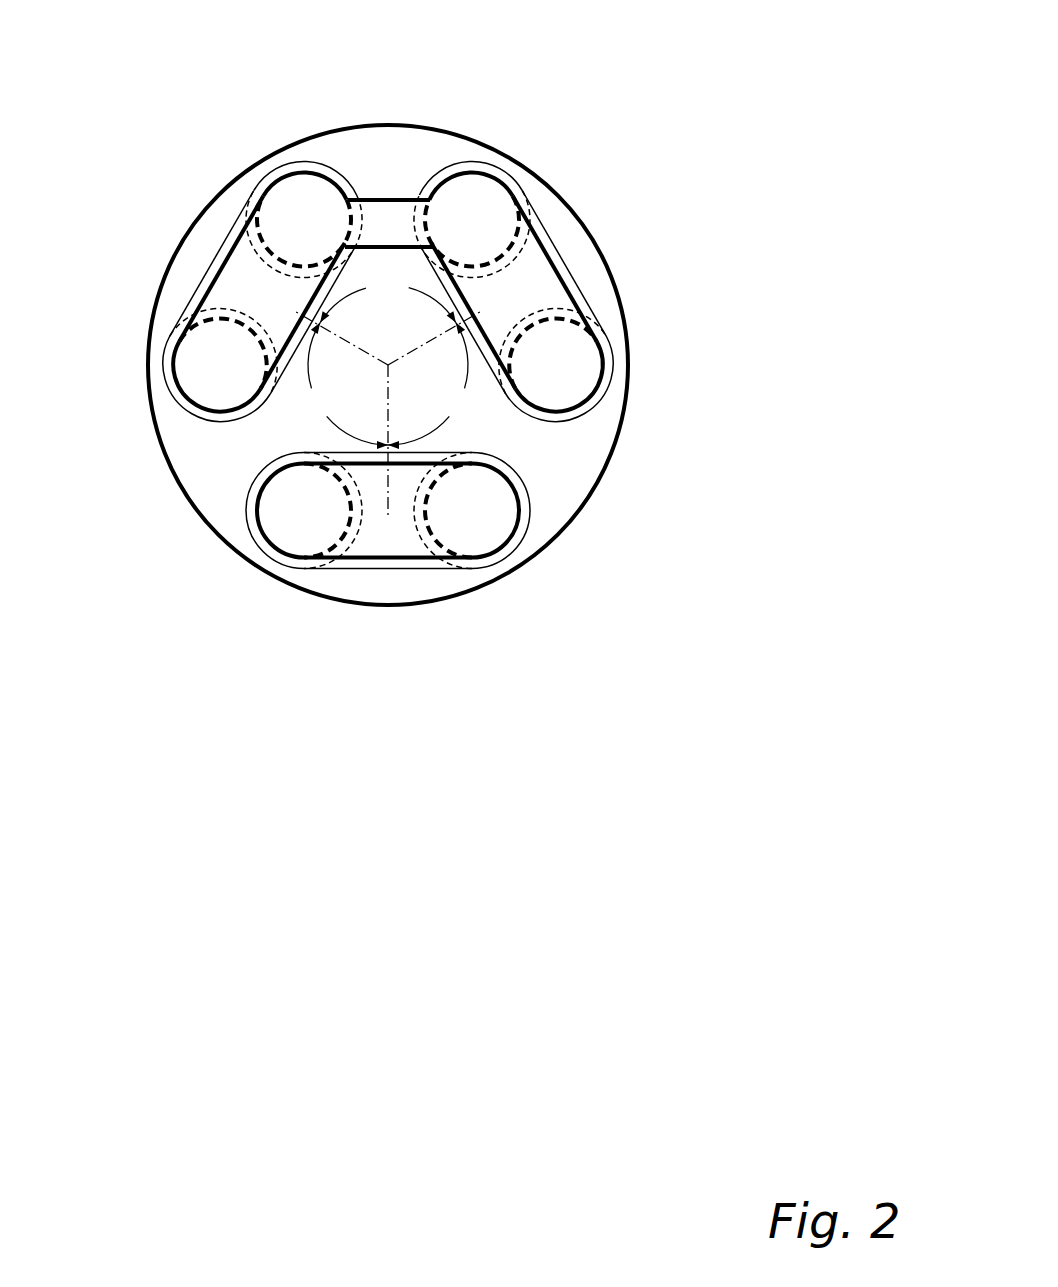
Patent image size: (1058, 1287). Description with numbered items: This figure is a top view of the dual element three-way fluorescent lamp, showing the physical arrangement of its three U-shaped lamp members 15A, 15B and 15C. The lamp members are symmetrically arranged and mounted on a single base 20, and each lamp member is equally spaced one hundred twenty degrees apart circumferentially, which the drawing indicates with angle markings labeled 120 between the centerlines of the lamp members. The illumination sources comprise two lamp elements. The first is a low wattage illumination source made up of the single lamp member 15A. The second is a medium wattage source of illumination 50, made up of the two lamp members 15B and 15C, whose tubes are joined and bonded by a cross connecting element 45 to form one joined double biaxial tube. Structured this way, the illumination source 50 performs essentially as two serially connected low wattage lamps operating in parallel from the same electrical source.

The base 20 is at (175, 477).
The lamp member 15A is at (389, 558).
The lamp member 15B is at (212, 272).
The lamp member 15C is at (560, 275).
The cross connecting element 45 is at (389, 200).
The medium wattage source of illumination 50 is at (597, 366).
The 120 degree angular spacing 120 is at (388, 399).